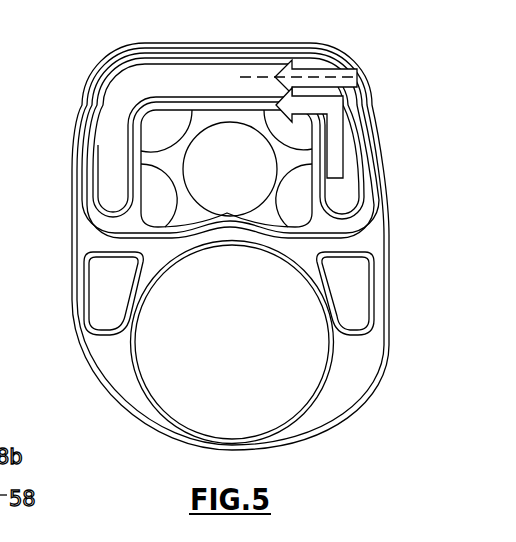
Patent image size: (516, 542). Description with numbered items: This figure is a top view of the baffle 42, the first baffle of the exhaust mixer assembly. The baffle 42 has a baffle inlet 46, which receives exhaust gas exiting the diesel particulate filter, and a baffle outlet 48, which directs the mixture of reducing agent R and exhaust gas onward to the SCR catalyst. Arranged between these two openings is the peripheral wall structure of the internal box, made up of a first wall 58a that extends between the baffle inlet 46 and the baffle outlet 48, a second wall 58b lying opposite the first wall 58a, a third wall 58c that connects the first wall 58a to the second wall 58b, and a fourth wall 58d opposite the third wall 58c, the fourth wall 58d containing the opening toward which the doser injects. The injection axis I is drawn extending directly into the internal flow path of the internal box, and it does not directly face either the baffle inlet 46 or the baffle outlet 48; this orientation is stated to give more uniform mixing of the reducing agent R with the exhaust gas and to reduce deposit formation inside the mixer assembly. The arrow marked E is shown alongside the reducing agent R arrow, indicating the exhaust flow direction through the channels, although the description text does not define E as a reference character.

The baffle 42 is at (376, 98).
The baffle inlet 46 is at (143, 388).
The baffle outlet 48 is at (202, 112).
The first wall 58a is at (143, 268).
The second wall 58b is at (247, 48).
The third wall 58c is at (81, 152).
The fourth wall 58d is at (381, 241).
The injection axis I is at (307, 86).
The reducing agent R is at (356, 71).
The exhaust flow direction E is at (335, 127).